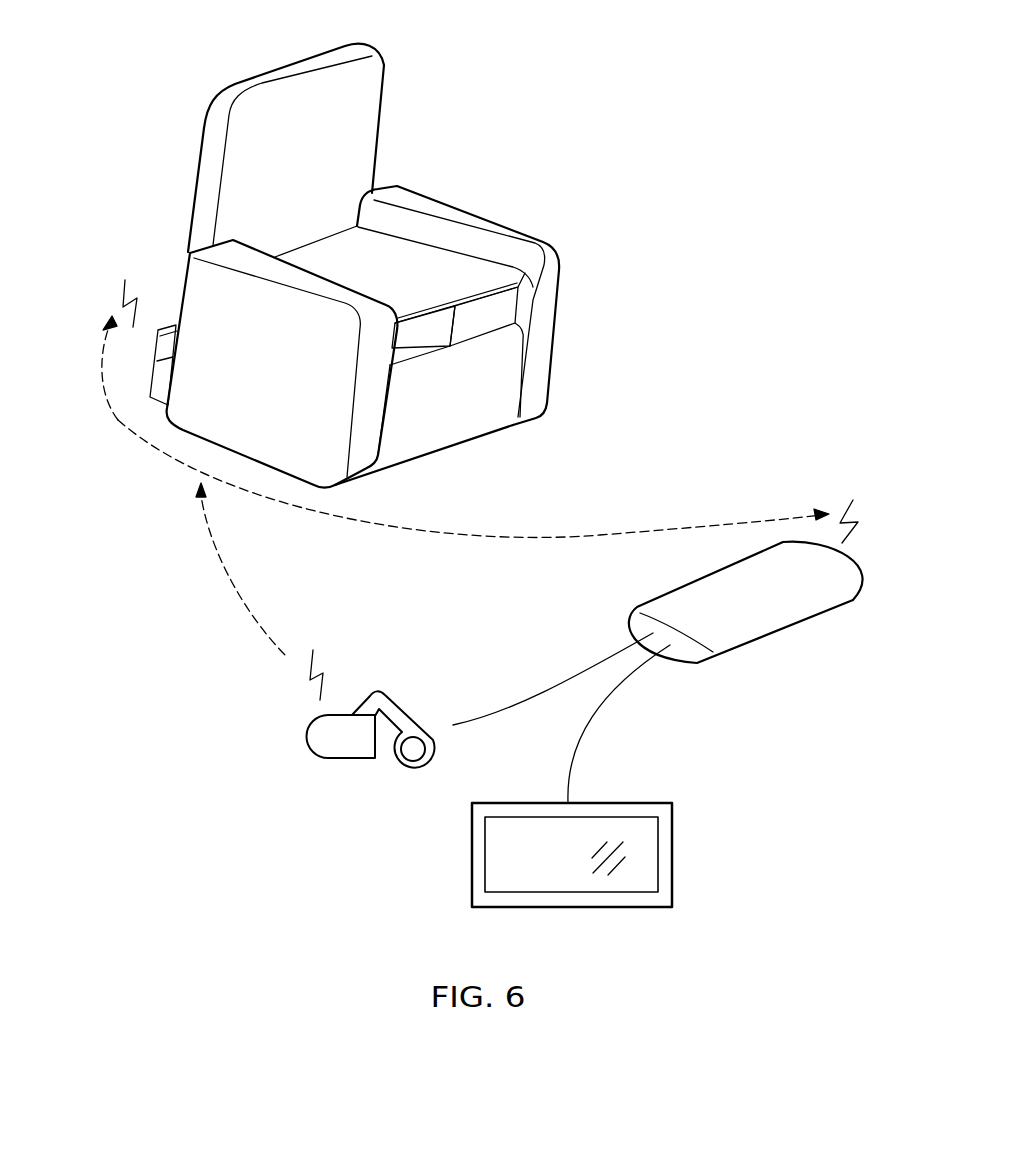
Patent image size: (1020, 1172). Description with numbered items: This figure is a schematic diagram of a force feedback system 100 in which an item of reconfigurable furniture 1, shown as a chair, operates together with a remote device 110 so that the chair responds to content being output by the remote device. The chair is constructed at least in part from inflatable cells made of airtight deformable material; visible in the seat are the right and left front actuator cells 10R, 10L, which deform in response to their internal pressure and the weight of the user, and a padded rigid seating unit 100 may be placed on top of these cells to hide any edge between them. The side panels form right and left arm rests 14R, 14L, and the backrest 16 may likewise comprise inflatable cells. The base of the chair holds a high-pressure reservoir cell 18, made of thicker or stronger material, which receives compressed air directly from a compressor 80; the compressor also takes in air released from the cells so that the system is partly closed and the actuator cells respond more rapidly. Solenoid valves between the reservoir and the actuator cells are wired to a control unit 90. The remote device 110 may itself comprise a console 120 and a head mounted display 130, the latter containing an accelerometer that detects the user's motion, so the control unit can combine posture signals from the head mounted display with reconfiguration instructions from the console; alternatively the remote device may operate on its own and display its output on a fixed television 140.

The item of furniture 1 is at (614, 335).
The system 100 is at (778, 116).
The backrest 16 is at (279, 151).
The arm rest 14L is at (527, 243).
The arm rest 14R is at (235, 382).
The front actuator cell 10R is at (401, 345).
The front actuator cell 10L is at (462, 330).
The high-pressure reservoir cell 18 is at (441, 414).
The compressor 80 is at (150, 392).
The control unit 90 is at (156, 345).
The remote device 110 is at (812, 765).
The console 120 is at (840, 603).
The head mounted display 130 is at (335, 760).
The fixed television 140 is at (672, 858).